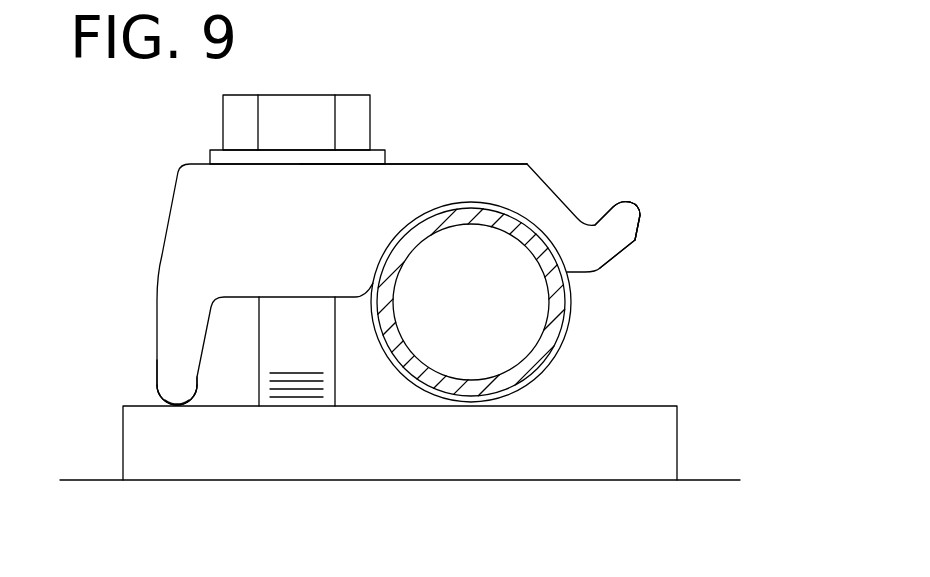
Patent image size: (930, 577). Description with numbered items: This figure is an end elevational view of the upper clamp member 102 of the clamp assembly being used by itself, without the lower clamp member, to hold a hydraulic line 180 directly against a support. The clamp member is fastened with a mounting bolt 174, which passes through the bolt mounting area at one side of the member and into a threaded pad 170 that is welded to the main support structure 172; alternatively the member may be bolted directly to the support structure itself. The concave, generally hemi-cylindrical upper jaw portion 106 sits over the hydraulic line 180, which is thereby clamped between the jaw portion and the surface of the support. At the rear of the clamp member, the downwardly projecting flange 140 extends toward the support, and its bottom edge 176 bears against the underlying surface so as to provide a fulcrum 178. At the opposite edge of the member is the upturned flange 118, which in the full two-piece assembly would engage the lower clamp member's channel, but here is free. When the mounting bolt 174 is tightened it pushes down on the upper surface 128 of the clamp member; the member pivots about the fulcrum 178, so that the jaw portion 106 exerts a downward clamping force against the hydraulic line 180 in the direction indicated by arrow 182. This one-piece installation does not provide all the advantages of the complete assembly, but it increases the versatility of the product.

The upper clamp member 102 is at (413, 163).
The upper jaw portion 106 is at (486, 200).
The upturned flange 118 is at (618, 228).
The upper surface 128 is at (463, 164).
The downwardly projecting flange 140 is at (175, 388).
The threaded pad 170 is at (635, 422).
The support structure 172 is at (708, 480).
The mounting bolt 174 is at (237, 119).
The bottom edge 176 is at (177, 406).
The fulcrum 178 is at (150, 398).
The hydraulic line 180 is at (548, 347).
The arrow 182 is at (583, 125).